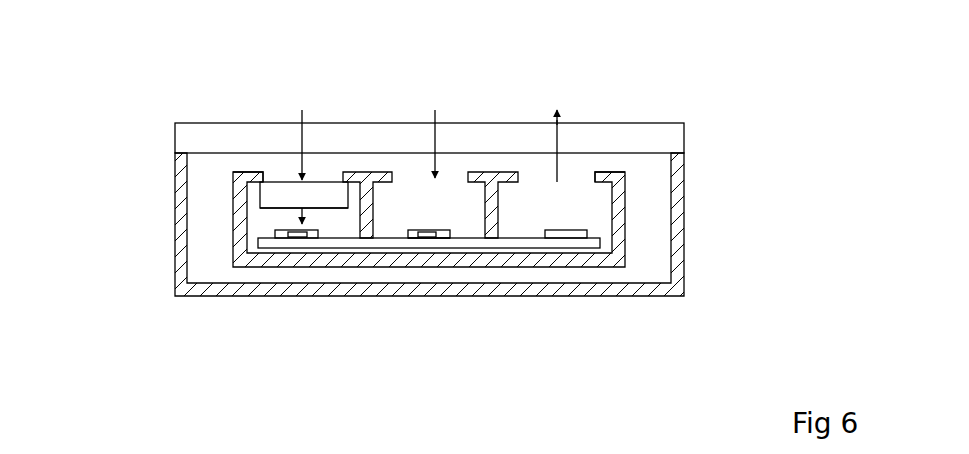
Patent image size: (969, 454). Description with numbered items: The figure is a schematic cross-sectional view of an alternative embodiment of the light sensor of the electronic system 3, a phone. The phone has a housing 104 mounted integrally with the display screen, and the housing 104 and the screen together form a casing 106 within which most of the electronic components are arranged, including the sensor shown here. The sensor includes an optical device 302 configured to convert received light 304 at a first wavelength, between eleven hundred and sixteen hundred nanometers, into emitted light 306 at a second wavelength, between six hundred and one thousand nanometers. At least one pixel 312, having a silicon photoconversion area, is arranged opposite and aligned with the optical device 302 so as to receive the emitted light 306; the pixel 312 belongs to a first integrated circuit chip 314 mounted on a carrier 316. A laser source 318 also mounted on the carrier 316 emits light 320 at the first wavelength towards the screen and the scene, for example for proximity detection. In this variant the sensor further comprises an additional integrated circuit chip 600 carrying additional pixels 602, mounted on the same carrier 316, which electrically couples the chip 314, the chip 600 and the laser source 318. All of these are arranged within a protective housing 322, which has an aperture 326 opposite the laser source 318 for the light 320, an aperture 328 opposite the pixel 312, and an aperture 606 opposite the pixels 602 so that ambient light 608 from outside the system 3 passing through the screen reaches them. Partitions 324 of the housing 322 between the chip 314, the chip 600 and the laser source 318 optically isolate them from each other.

The electronic system 3 is at (108, 42).
The housing 104 is at (678, 268).
The casing 106 is at (650, 207).
The optical device 302 is at (320, 206).
The received light 304 is at (303, 111).
The emitted light 306 is at (312, 212).
The pixel 312 is at (302, 239).
The first integrated circuit chip 314 is at (318, 233).
The carrier 316 is at (342, 246).
The laser source 318 is at (557, 238).
The emitted laser light 320 is at (560, 120).
The protective housing 322 is at (613, 272).
The partitions 324 is at (373, 207).
The aperture 326 is at (594, 178).
The aperture 328 is at (262, 180).
The integrated circuit chip 600 is at (444, 240).
The additional pixel 602 is at (427, 234).
The aperture 606 is at (468, 174).
The ambient light 608 is at (436, 112).